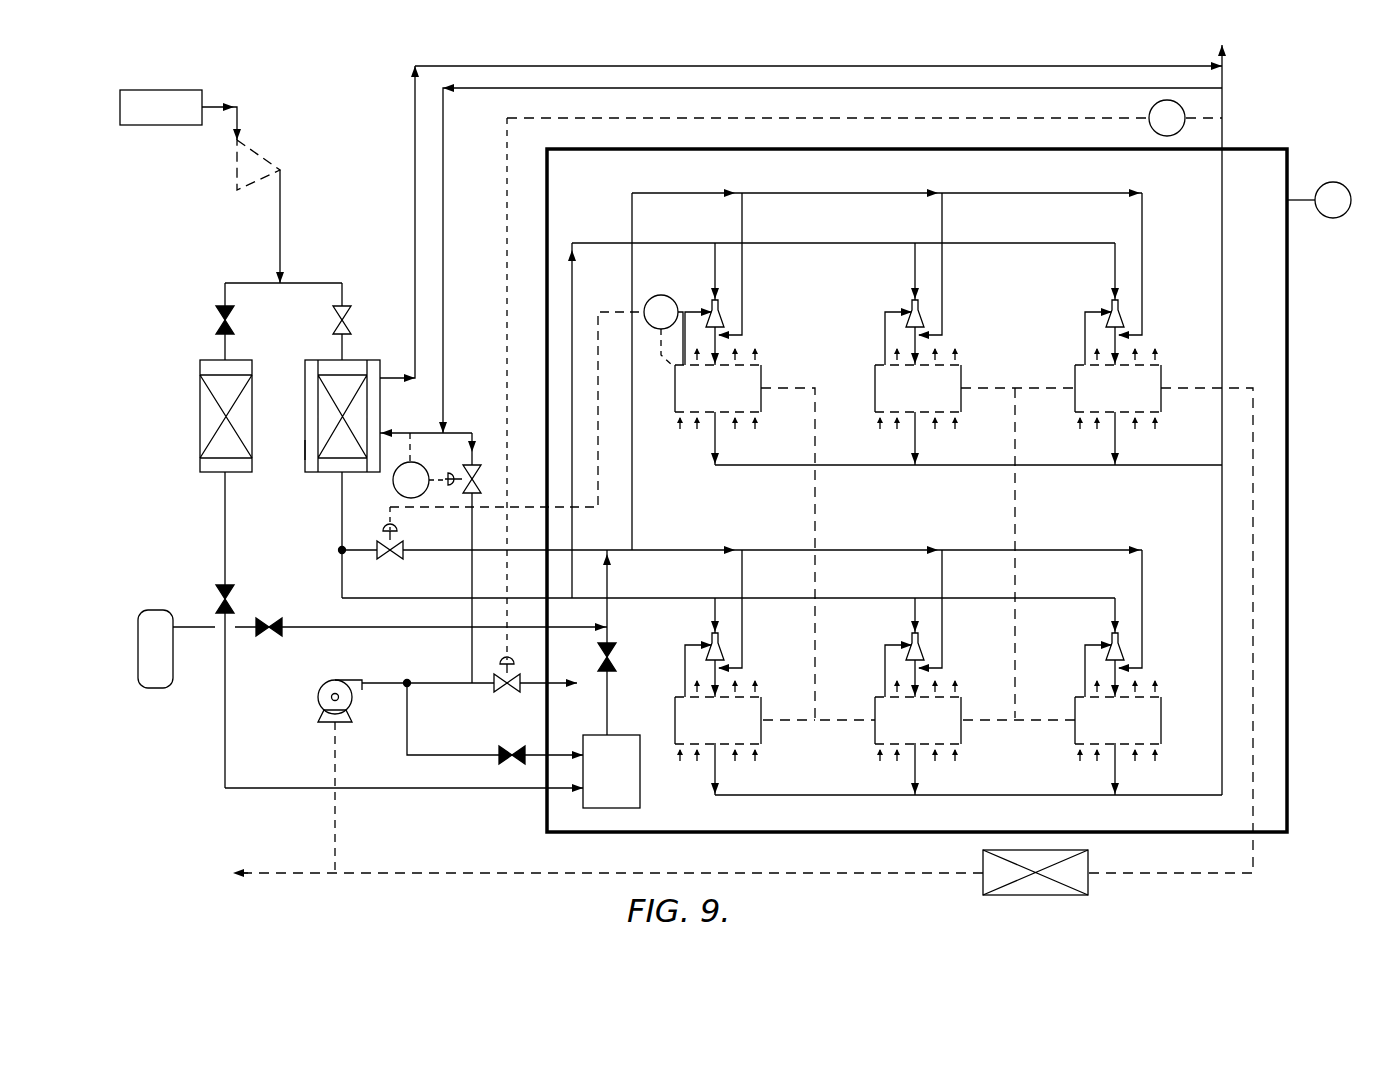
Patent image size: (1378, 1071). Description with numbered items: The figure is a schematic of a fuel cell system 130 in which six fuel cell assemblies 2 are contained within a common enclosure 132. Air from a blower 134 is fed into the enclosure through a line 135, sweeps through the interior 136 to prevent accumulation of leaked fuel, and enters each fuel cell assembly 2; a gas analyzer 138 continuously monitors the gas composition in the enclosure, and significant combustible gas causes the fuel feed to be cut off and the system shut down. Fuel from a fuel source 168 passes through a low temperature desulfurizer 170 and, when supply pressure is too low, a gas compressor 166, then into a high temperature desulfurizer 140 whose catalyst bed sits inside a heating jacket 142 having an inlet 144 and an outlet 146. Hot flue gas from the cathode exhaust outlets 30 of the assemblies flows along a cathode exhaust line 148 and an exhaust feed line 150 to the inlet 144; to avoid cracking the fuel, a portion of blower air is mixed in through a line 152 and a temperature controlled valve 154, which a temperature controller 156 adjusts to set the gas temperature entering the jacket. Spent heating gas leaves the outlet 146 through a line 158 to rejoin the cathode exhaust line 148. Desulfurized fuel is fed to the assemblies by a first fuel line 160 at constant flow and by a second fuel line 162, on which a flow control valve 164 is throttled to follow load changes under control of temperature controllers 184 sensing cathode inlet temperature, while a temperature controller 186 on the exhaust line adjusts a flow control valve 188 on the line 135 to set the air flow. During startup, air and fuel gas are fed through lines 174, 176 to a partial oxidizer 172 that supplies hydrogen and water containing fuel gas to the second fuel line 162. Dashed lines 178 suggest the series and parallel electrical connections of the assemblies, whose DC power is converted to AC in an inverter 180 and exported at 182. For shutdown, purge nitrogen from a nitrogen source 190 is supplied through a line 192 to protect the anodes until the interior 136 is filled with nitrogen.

The fuel cell assembly 2 is at (685, 445).
The cathode exhaust outlet 30 is at (1112, 441).
The fuel cell system 130 is at (1300, 106).
The enclosure 132 is at (1288, 433).
The blower 134 is at (318, 694).
The air line 135 is at (436, 683).
The enclosure interior 136 is at (1200, 586).
The gas analyzer 138 is at (1321, 216).
The high temperature desulfurizer 140 is at (318, 357).
The heating jacket 142 is at (305, 442).
The heating jacket inlet 144 is at (398, 433).
The heating jacket outlet 146 is at (404, 372).
The cathode exhaust line 148 is at (1224, 104).
The exhaust feed line 150 is at (777, 89).
The air mixing line 152 is at (472, 578).
The temperature controlled valve 154 is at (480, 470).
The temperature controller 156 is at (393, 491).
The jacket outlet line 158 is at (690, 66).
The first fuel line 160 is at (782, 243).
The second fuel line 162 is at (793, 193).
The flow control valve 164 is at (400, 542).
The gas compressor 166 is at (254, 146).
The fuel source 168 is at (200, 90).
The low temperature desulfurizer 170 is at (200, 393).
The partial oxidizer 172 is at (625, 735).
The air startup line 174 is at (415, 757).
The fuel startup line 176 is at (375, 790).
The electrical connections 178 is at (1015, 508).
The inverter 180 is at (1089, 860).
The power export point 182 is at (243, 882).
The temperature controller 184 is at (652, 295).
The temperature controller 186 is at (1152, 108).
The flow control valve 188 is at (500, 700).
The nitrogen source 190 is at (160, 610).
The nitrogen purge line 192 is at (295, 627).